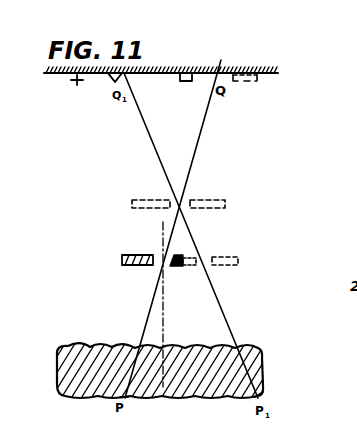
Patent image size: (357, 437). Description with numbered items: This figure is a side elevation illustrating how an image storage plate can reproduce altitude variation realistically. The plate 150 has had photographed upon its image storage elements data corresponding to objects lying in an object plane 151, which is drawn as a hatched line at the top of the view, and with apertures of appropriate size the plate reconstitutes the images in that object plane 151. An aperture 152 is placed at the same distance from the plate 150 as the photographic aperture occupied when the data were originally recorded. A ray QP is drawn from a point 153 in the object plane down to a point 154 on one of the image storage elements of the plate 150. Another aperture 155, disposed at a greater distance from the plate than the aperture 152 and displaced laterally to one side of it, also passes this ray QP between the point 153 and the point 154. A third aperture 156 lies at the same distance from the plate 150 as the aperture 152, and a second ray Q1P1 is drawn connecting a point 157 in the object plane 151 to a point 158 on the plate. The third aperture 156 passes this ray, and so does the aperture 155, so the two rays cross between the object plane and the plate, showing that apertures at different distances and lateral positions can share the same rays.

The plate 150 is at (94, 341).
The object plane 151 is at (271, 77).
The aperture 152 is at (157, 256).
The point 153 is at (220, 63).
The point 154 is at (120, 397).
The aperture 155 is at (192, 201).
The third aperture 156 is at (215, 259).
The point 157 is at (127, 75).
The point 158 is at (265, 395).